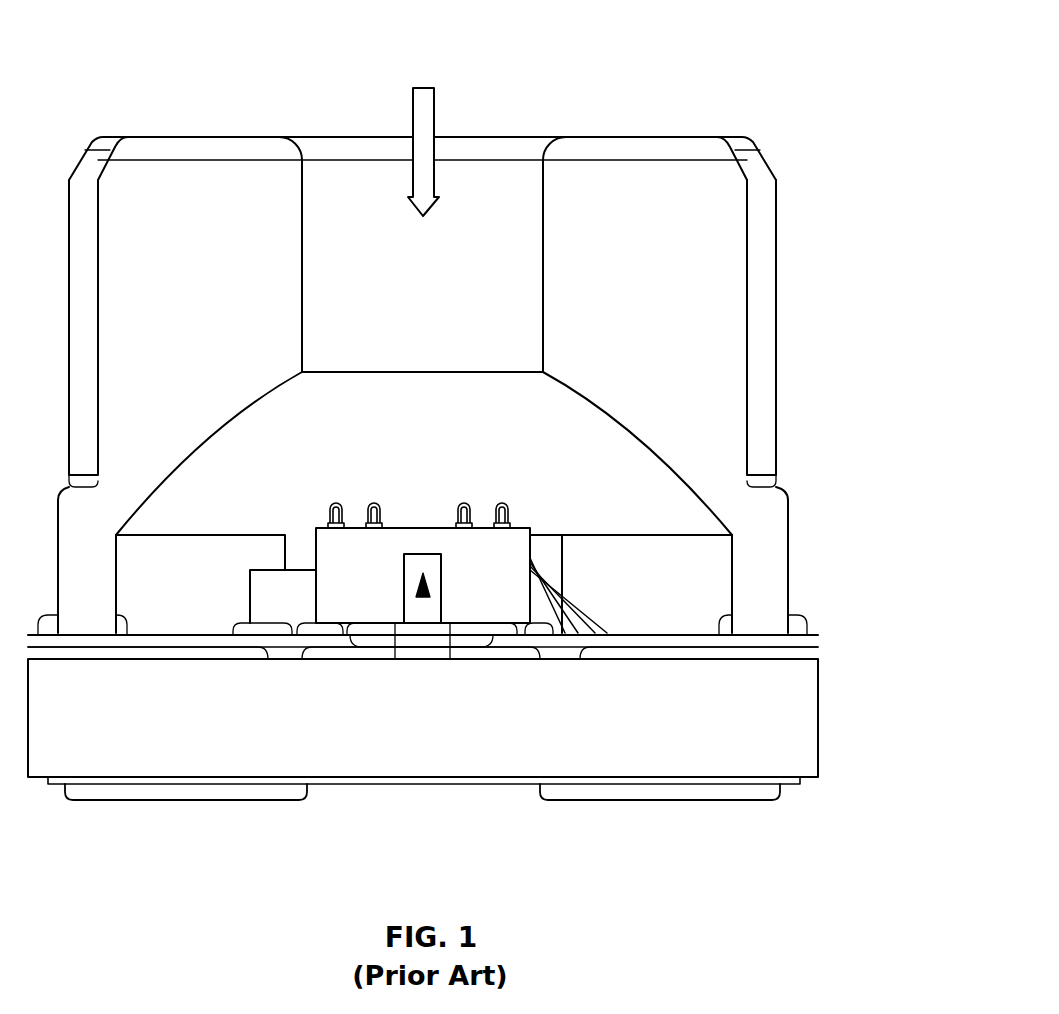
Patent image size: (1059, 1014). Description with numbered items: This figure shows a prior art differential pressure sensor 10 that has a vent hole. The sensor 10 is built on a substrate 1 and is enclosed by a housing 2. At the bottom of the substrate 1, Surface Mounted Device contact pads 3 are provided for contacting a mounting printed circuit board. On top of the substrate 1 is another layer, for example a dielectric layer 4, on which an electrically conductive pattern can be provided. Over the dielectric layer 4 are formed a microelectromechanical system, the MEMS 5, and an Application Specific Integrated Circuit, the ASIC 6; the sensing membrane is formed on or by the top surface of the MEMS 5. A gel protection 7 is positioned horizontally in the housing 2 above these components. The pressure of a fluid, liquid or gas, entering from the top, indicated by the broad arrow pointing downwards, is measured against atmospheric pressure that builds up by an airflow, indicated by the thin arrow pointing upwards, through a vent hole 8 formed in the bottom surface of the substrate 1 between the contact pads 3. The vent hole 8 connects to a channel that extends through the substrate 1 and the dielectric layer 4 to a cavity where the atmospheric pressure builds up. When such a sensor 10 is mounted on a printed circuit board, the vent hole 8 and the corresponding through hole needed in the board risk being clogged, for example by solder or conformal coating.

The substrate 1 is at (818, 707).
The housing 2 is at (767, 421).
The Surface Mounted Device (SMD) contact pads 3 is at (783, 786).
The dielectric layer 4 is at (818, 643).
The microelectromechanical system (MEMS) 5 is at (503, 553).
The Application Specific Integrated Circuit (ASIC) 6 is at (260, 600).
The gel protection 7 is at (574, 411).
The vent hole 8 is at (423, 597).
The differential pressure sensor 10 is at (815, 115).